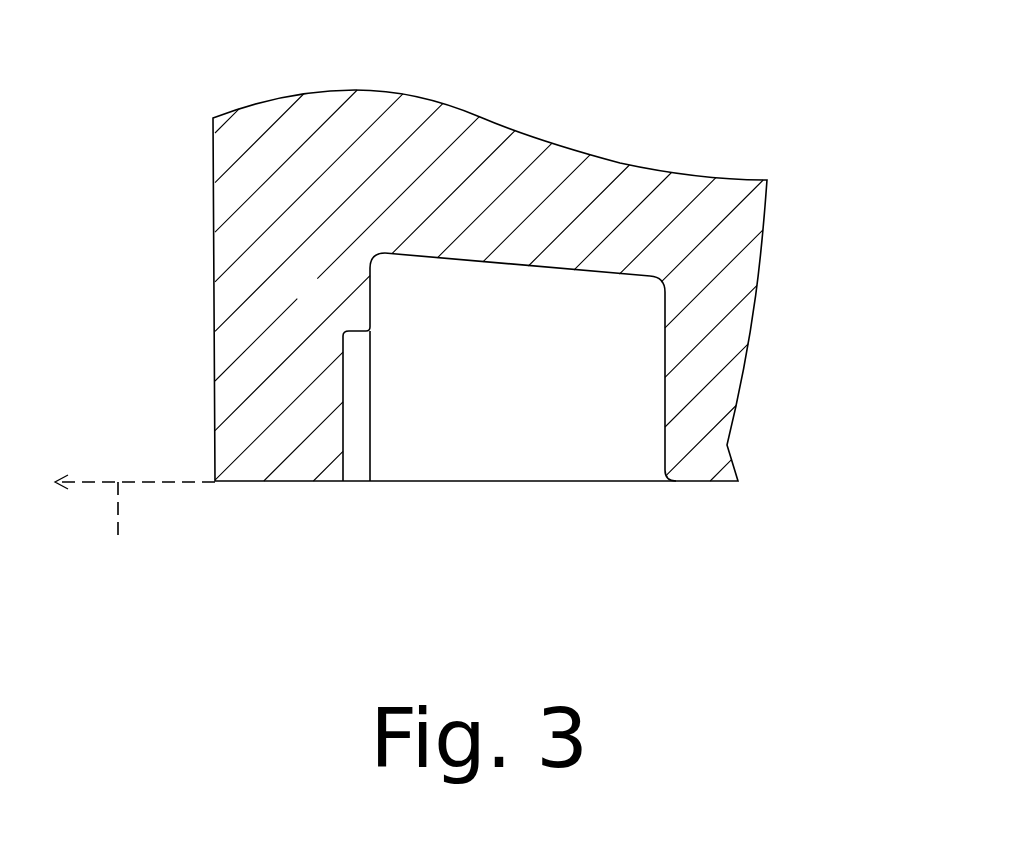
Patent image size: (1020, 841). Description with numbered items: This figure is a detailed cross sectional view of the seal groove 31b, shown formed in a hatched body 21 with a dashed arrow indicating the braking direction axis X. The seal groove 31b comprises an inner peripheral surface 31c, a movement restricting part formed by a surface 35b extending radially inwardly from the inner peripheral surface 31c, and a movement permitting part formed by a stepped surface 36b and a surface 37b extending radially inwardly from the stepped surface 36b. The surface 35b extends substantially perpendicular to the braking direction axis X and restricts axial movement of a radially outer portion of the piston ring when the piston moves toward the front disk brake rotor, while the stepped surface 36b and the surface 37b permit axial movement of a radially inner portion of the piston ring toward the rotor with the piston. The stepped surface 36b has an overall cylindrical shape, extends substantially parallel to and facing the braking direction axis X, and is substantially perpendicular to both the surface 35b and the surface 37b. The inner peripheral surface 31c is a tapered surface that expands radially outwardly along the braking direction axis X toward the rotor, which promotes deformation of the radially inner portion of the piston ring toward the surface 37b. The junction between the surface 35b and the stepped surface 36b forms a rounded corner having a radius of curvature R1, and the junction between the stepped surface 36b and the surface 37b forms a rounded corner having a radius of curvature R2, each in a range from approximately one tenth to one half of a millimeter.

The rotor (cross-section) 21 is at (572, 162).
The seal groove 31b is at (539, 456).
The inner peripheral surface 31c is at (540, 262).
The surface 35b is at (371, 292).
The stepped surface 36b is at (372, 370).
The surface 37b is at (343, 410).
The radius of curvature R1 is at (373, 331).
The radius of curvature R2 is at (344, 329).
The braking direction axis X is at (135, 524).